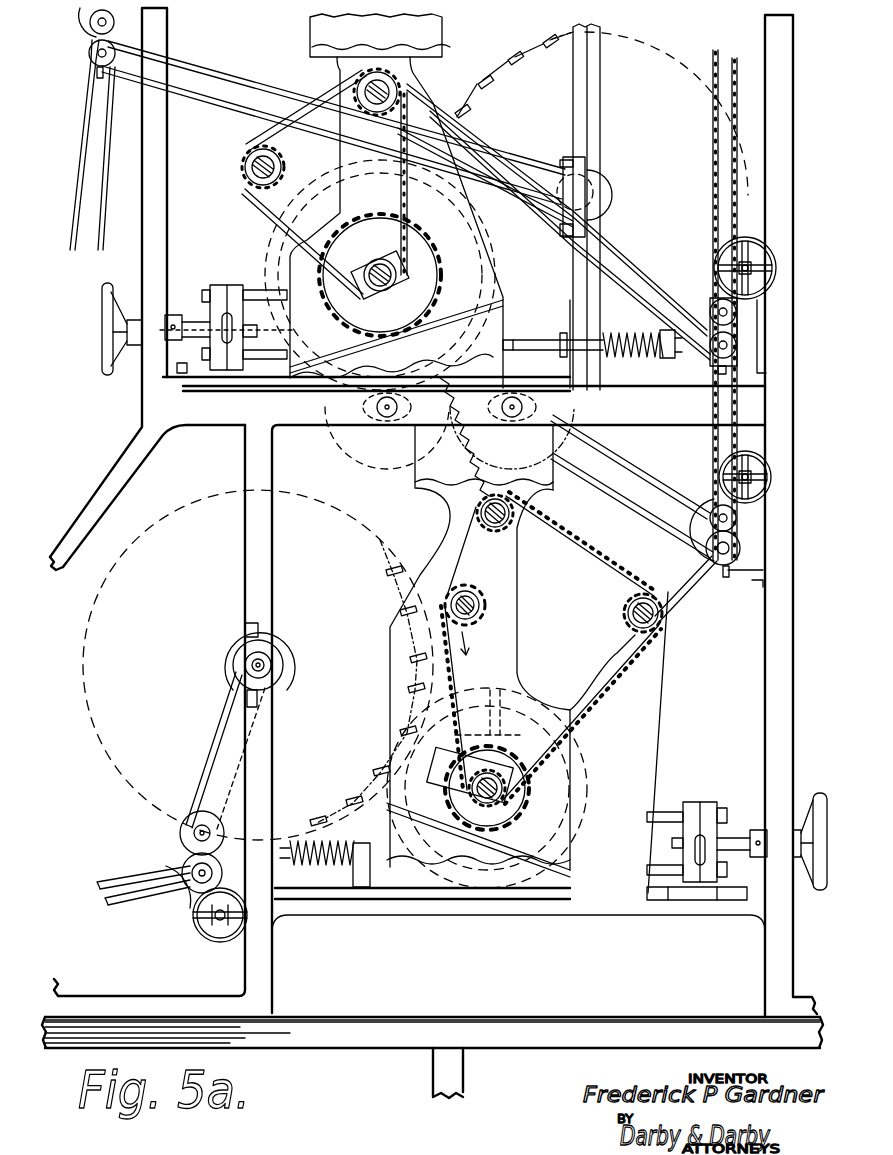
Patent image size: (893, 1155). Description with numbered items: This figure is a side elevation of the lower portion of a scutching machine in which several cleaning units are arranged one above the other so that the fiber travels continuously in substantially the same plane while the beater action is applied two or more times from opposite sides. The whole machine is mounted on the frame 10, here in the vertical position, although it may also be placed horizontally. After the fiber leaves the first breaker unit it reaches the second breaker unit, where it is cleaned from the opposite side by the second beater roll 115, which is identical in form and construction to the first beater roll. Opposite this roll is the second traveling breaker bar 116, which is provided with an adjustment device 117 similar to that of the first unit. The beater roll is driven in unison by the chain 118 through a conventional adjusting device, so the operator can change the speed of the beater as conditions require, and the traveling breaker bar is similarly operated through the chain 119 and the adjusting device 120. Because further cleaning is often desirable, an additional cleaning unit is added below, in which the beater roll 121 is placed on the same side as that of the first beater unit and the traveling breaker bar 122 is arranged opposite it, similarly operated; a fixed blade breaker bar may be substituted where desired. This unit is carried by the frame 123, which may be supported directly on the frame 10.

The frame 10 is at (446, 1020).
The second beater roll 115 is at (514, 75).
The second traveling breaker bar 116 is at (258, 215).
The adjustment device 117 is at (100, 338).
The chain 118 is at (241, 72).
The chain 119 is at (643, 259).
The adjusting device 120 is at (710, 284).
The beater roll 121 is at (378, 558).
The traveling breaker bar 122 is at (462, 556).
The frame 123 is at (384, 912).